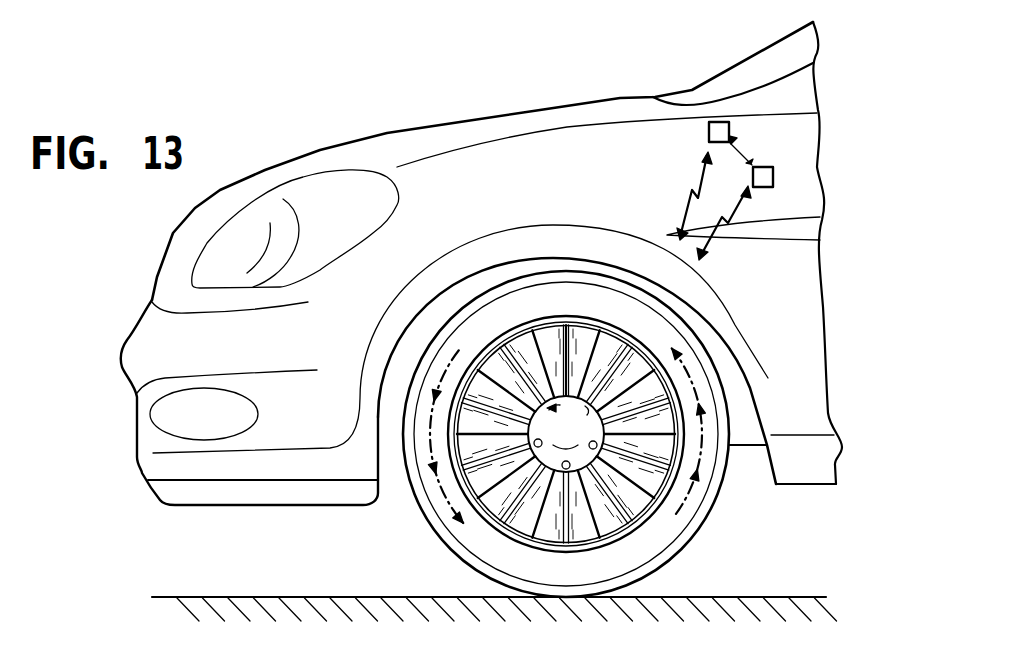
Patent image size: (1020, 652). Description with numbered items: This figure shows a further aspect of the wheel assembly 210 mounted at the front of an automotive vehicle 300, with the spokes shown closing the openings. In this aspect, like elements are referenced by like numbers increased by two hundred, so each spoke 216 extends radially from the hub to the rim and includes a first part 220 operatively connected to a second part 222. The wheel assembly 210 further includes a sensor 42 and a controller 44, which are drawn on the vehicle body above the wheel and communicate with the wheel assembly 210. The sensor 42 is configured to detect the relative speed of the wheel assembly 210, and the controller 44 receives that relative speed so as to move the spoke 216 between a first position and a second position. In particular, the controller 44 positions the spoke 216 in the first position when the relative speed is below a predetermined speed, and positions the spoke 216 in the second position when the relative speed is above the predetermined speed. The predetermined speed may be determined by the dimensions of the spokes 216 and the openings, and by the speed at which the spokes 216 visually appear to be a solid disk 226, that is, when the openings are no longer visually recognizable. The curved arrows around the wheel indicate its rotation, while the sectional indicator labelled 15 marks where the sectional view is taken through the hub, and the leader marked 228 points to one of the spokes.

The vehicle 300 is at (578, 118).
The sensor 42 is at (709, 132).
The controller 44 is at (774, 177).
The wheel assembly 210 is at (420, 535).
The first part 220 is at (543, 318).
The second part 222 is at (512, 340).
The spoke 216 is at (601, 312).
The spoke 228 is at (570, 338).
The solid disk 226 is at (663, 530).
The section indicator 15 is at (595, 273).